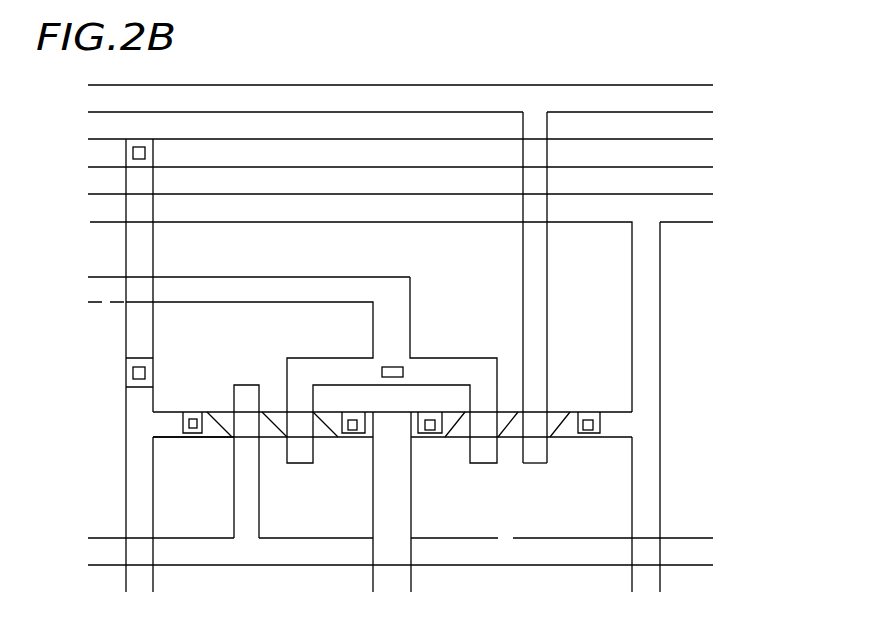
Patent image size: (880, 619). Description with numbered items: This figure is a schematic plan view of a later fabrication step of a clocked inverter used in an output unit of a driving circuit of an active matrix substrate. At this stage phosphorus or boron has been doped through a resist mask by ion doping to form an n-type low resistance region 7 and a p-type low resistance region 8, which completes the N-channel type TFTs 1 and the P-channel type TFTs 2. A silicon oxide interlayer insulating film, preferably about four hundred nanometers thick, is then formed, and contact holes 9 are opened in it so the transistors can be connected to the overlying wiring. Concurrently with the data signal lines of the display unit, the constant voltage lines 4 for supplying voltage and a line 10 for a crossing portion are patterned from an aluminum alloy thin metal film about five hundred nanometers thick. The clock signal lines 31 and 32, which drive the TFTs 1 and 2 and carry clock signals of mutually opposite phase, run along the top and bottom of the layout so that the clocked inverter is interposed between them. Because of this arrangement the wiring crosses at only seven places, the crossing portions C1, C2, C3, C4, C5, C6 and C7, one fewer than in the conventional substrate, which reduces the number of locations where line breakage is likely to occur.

The N-channel type TFT 1 is at (245, 368).
The P-channel type TFT 2 is at (477, 468).
The constant voltage line 4 is at (690, 142).
The n-type low resistance region 7 is at (218, 440).
The p-type low resistance region 8 is at (562, 422).
The contact hole 9 is at (133, 152).
The line for a crossing portion 10 is at (376, 288).
The clock signal line 31 is at (636, 93).
The clock signal line 32 is at (687, 545).
The crossing portion C1 is at (527, 152).
The crossing portion C2 is at (540, 210).
The crossing portion C3 is at (130, 212).
The crossing portion C4 is at (130, 290).
The crossing portion C5 is at (652, 552).
The crossing portion C6 is at (405, 552).
The crossing portion C7 is at (147, 552).